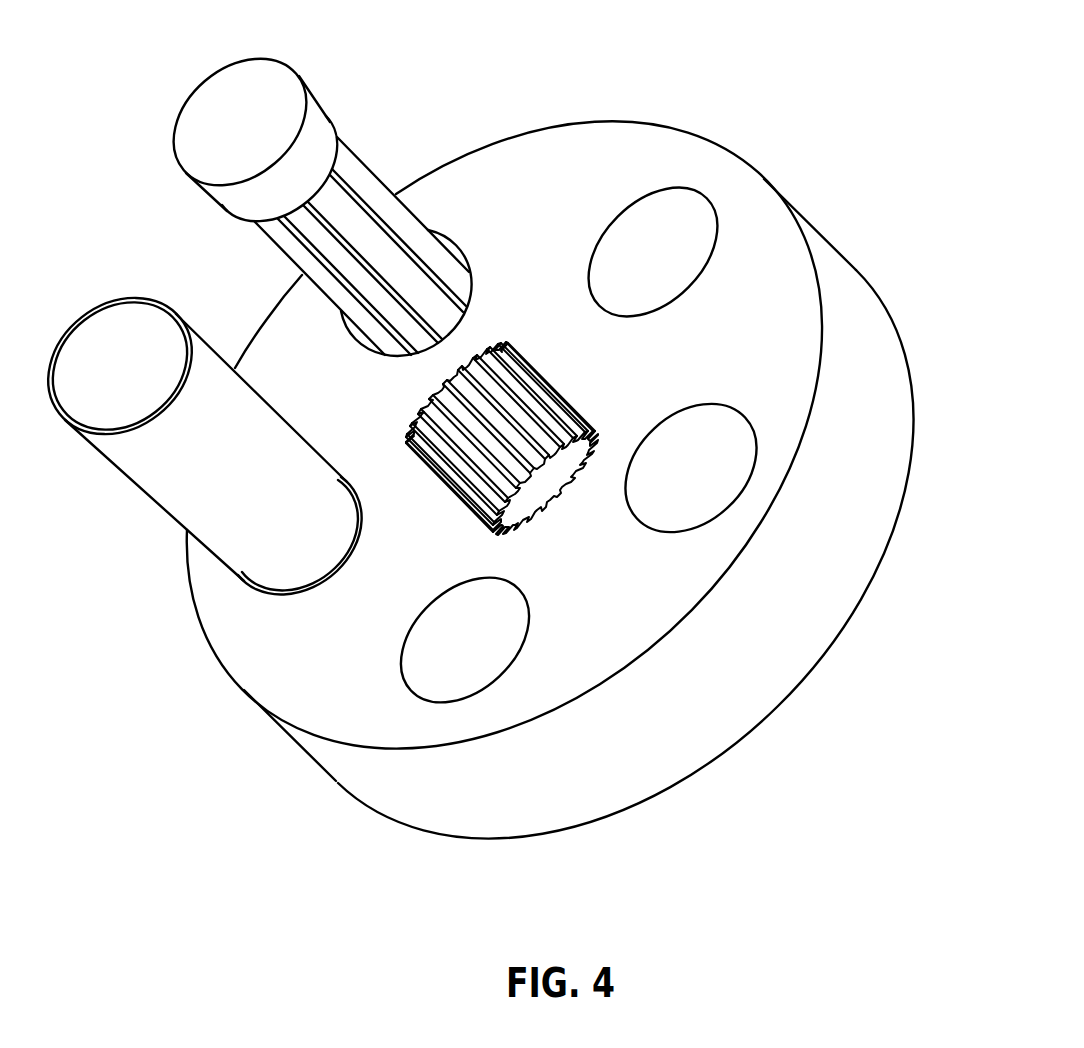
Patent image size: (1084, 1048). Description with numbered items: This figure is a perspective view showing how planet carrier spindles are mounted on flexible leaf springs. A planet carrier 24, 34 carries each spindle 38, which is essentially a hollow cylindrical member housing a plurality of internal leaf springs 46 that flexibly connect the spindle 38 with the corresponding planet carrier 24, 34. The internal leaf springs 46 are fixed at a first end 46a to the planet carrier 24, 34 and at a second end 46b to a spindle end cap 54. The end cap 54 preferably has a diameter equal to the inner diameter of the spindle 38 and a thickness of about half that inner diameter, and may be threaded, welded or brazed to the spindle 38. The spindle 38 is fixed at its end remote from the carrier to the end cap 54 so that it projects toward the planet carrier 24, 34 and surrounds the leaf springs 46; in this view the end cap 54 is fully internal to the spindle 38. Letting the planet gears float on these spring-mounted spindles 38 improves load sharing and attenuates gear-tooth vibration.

The planet carrier 24 is at (550, 508).
The planet carrier 34 is at (668, 800).
The spindle 38 is at (267, 423).
The internal leaf springs 46 is at (392, 213).
The first end 46a is at (471, 289).
The second end 46b is at (339, 131).
The end cap 54 is at (282, 73).